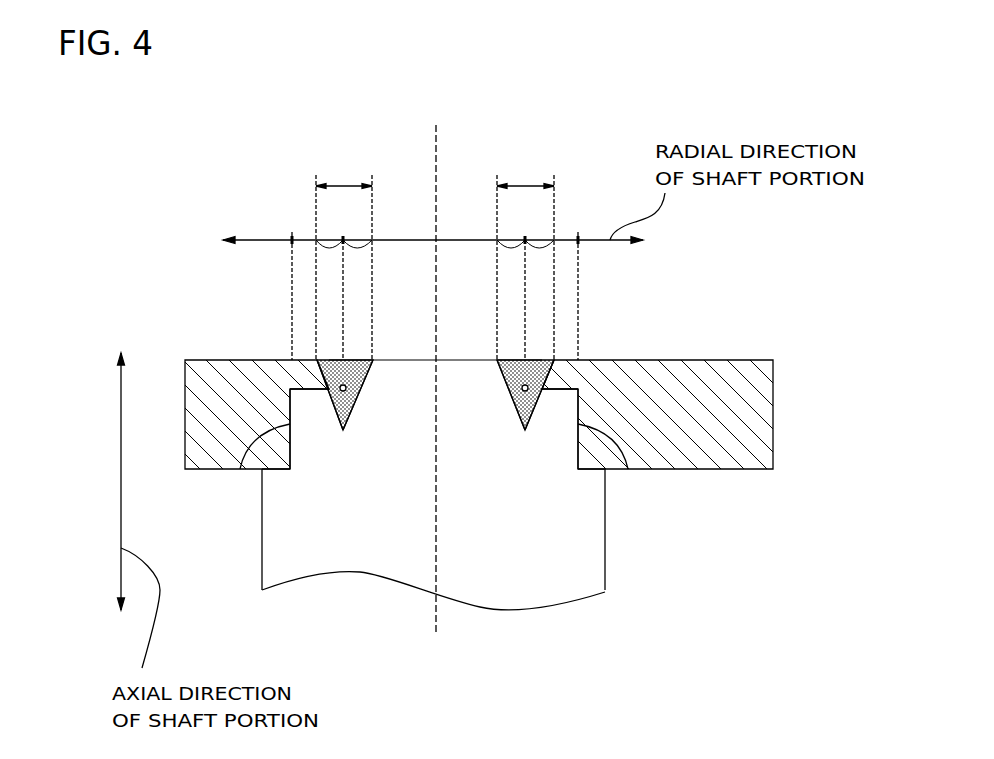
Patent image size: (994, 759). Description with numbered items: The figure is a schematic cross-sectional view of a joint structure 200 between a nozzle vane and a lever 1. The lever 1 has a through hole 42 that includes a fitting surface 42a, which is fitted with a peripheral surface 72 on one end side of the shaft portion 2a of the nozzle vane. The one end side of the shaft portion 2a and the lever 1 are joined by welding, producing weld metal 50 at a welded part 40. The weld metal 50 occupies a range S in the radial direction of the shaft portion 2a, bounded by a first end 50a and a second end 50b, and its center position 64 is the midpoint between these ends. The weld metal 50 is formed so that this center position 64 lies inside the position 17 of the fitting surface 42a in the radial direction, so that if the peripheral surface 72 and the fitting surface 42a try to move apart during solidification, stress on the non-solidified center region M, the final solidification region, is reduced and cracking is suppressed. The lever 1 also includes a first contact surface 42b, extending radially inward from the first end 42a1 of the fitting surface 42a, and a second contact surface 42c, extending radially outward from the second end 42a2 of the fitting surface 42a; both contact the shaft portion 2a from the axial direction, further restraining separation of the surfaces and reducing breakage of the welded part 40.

The lever 1 is at (735, 360).
The joint structure 200 is at (683, 103).
The shaft portion 2a is at (608, 573).
The position of the fitting surface 17 is at (290, 232).
The range formed by the weld metal S is at (435, 261).
The center position of the weld metal 64 is at (346, 235).
The welded part 40 is at (279, 316).
The through hole 42 is at (309, 443).
The fitting surface 42a is at (290, 445).
The first end of the fitting surface 42a1 is at (665, 322).
The second end of the fitting surface 42a2 is at (268, 592).
The first contact surface 42b is at (290, 405).
The second contact surface 42c is at (263, 472).
The weld metal 50 is at (364, 382).
The first end of the weld metal 50a is at (317, 362).
The second end of the weld metal 50b is at (368, 362).
The peripheral surface 72 is at (240, 469).
The center region of the weld metal M is at (358, 395).